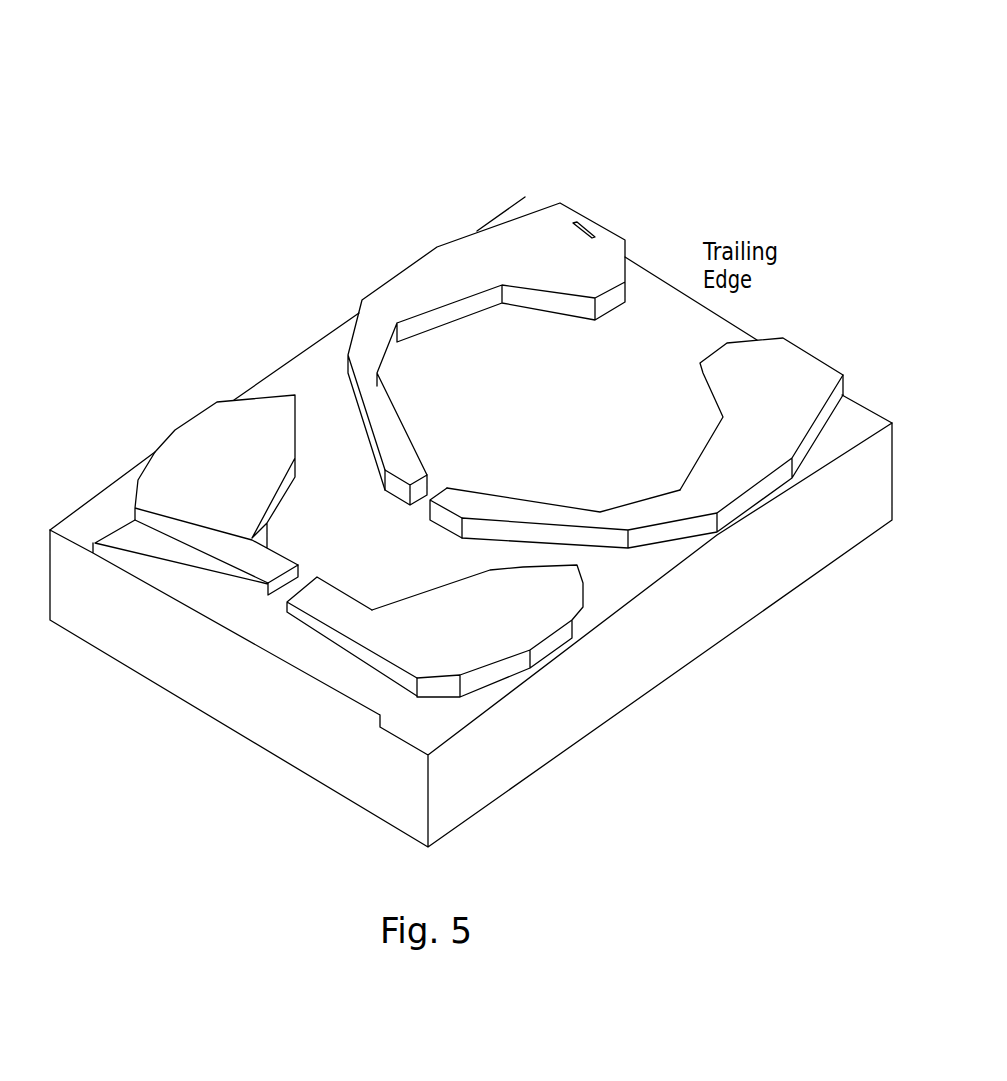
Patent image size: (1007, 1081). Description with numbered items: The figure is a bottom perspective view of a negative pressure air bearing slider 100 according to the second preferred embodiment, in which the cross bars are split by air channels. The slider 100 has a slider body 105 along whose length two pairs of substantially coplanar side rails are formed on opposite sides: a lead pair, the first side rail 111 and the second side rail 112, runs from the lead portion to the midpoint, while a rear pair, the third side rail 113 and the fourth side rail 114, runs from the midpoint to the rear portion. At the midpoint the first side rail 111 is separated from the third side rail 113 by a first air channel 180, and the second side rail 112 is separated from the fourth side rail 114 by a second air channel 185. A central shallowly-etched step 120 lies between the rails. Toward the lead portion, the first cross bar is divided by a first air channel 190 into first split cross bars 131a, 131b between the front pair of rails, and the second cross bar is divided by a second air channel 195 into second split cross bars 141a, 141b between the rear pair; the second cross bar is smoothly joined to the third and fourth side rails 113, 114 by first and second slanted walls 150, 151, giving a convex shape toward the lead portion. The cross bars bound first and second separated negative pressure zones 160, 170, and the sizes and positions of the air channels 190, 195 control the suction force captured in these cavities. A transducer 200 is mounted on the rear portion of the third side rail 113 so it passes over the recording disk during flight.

The slider 100 is at (768, 100).
The slider body 105 is at (471, 522).
The first side rail 111 is at (216, 464).
The second side rail 112 is at (486, 639).
The third side rail 113 is at (491, 327).
The fourth side rail 114 is at (767, 408).
The central shallowly-etched step 120 is at (192, 627).
The first split cross bar 131a is at (196, 565).
The first split cross bar 131b is at (337, 648).
The second split cross bar 141a is at (423, 443).
The second split cross bar 141b is at (520, 492).
The first slanted wall 150 is at (326, 300).
The second slanted wall 151 is at (636, 466).
The first negative pressure zone 160 is at (408, 554).
The second negative pressure zone 170 is at (515, 416).
The first air channel 180 is at (283, 376).
The second air channel 185 is at (637, 590).
The first air channel 190 is at (221, 644).
The second air channel 195 is at (369, 515).
The transducer 200 is at (590, 222).